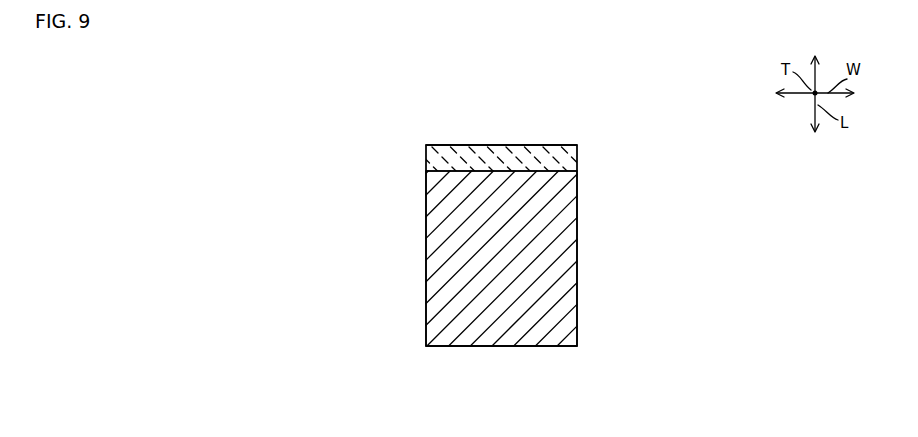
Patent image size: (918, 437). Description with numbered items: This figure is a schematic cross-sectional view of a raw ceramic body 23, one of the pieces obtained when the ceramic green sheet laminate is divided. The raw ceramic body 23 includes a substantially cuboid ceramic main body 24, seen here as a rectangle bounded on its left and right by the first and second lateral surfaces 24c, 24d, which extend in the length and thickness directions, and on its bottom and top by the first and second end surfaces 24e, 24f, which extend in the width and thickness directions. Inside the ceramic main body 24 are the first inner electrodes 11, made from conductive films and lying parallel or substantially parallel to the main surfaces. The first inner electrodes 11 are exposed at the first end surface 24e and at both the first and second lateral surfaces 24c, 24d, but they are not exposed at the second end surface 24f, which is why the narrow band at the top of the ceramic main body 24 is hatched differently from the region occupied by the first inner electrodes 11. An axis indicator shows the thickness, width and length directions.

The first inner electrode 11 is at (580, 268).
The raw ceramic body 23 is at (603, 105).
The ceramic main body 24 is at (580, 163).
The first lateral surface 24c is at (426, 256).
The second lateral surface 24d is at (578, 212).
The first end surface 24e is at (497, 347).
The second end surface 24f is at (499, 145).